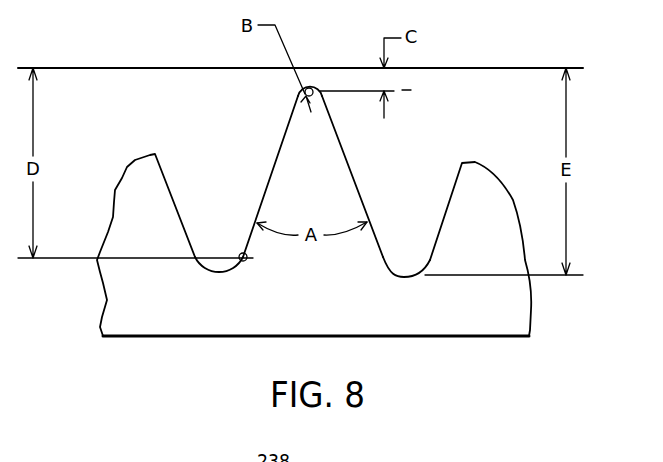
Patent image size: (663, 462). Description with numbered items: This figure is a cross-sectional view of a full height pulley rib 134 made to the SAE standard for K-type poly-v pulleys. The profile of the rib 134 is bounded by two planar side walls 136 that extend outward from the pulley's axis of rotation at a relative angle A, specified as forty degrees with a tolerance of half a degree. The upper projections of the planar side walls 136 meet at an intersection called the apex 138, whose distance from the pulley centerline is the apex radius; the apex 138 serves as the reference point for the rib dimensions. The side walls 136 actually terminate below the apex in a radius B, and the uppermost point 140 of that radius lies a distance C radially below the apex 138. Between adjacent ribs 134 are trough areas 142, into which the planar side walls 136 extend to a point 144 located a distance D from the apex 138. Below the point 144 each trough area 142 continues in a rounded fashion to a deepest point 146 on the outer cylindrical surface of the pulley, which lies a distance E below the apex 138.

The full height rib 134 is at (304, 130).
The planar side walls 136 is at (286, 131).
The apex 138 is at (307, 88).
The uppermost point of radius B 140 is at (316, 88).
The trough areas 142 is at (216, 246).
The point 144 is at (247, 261).
The deepest point 146 is at (402, 277).